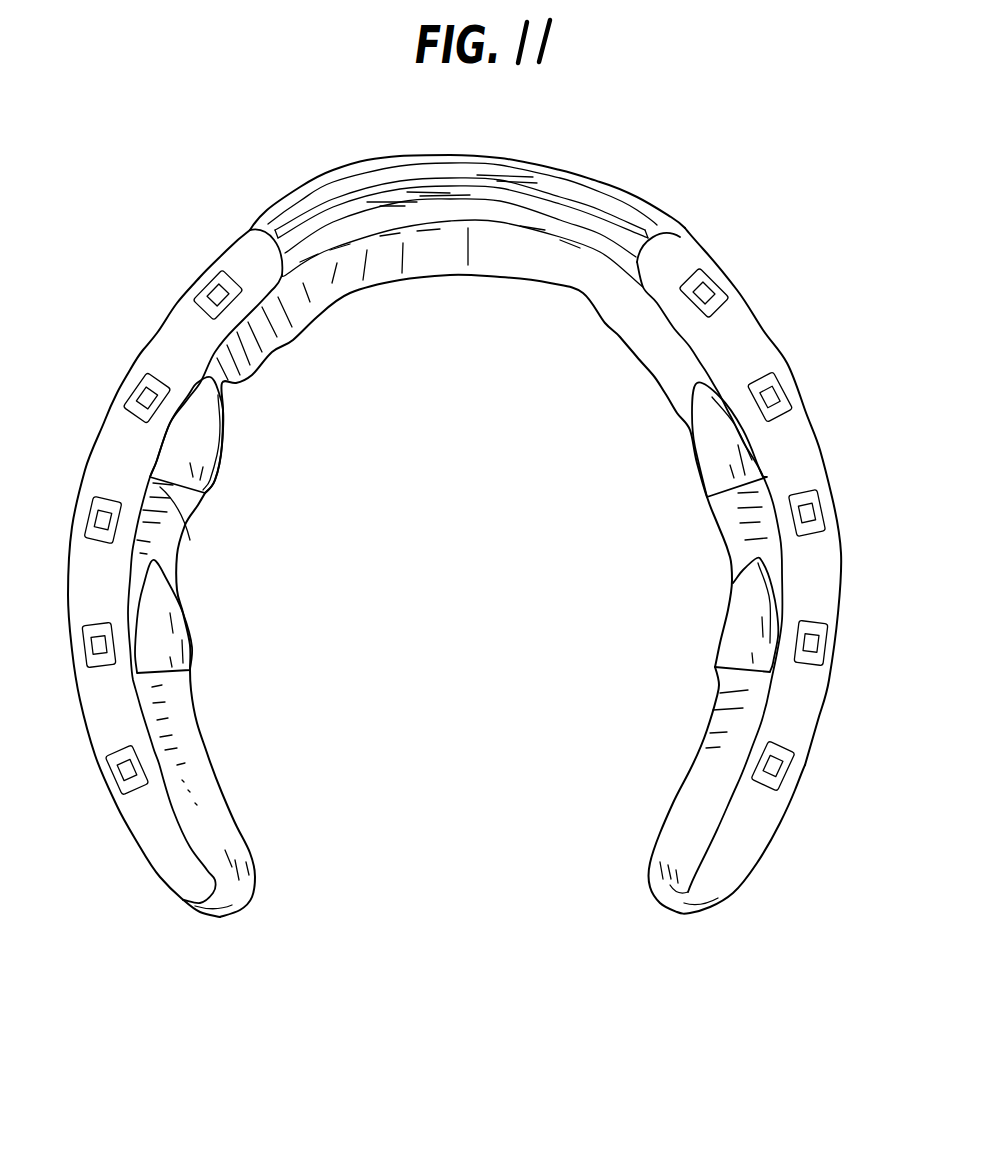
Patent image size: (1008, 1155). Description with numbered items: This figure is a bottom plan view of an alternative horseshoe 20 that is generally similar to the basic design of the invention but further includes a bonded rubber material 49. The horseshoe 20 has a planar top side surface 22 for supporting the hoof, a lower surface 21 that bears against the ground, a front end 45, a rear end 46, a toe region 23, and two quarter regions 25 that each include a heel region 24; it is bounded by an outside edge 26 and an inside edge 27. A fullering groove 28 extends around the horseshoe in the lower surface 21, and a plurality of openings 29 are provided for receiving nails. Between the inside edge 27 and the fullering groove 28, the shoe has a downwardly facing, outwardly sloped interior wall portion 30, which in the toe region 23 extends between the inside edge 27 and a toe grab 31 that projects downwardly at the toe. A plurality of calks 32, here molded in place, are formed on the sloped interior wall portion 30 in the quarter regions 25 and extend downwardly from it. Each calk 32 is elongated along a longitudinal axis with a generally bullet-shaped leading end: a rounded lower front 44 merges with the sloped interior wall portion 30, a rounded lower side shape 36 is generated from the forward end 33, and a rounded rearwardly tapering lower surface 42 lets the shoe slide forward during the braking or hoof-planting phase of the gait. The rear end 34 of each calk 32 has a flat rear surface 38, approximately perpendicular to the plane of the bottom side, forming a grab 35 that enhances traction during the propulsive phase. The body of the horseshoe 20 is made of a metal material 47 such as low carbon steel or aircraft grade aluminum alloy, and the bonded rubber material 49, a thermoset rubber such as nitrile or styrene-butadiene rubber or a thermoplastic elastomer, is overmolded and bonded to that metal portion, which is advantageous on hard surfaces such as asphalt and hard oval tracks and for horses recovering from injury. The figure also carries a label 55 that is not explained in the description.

The horseshoe 20 is at (733, 190).
The lower surface 21 is at (718, 287).
The planar top side surface 22 is at (747, 353).
The toe region 23 is at (537, 163).
The heel region 24 is at (763, 852).
The quarter region 25 is at (841, 553).
The outside edge 26 is at (817, 430).
The inside edge 27 is at (731, 530).
The fullering groove 28 is at (791, 720).
The openings 29 is at (127, 770).
The sloped interior wall portion 30 is at (584, 287).
The toe grab 31 is at (368, 182).
The calk 32 is at (192, 458).
The forward end 33 is at (290, 341).
The rear end 34 is at (183, 495).
The grab 35 is at (195, 497).
The rounded lower side shape 36 is at (205, 414).
The flat rear surface 38 is at (160, 487).
The rounded rearwardly tapering lower surface 42 is at (198, 440).
The rounded lower front 44 is at (240, 384).
The front end 45 is at (473, 157).
The rear end 46 is at (237, 913).
The metal material 47 is at (297, 200).
The bonded rubber material 49 is at (150, 353).
The inner section surface 55 is at (547, 267).